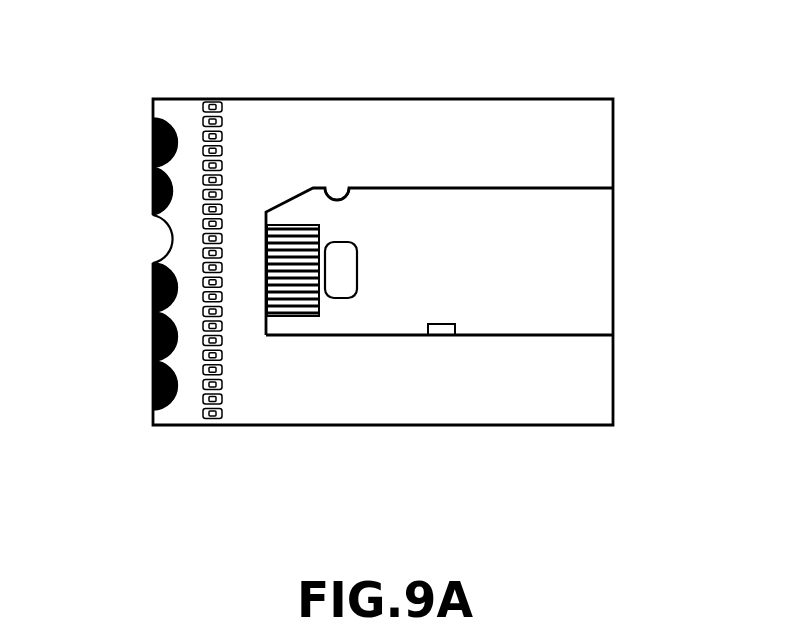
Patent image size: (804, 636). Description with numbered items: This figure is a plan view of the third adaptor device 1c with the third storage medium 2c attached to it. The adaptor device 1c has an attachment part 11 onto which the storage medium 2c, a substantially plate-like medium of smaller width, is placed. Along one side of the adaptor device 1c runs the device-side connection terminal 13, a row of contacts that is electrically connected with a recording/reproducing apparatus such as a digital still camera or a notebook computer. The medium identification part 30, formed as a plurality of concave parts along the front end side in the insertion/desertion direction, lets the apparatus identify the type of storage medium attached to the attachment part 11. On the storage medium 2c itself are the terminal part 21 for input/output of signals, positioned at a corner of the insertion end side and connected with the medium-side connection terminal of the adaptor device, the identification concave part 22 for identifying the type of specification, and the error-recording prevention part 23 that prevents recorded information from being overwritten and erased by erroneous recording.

The third adaptor device 1c is at (212, 452).
The third storage medium 2c is at (538, 261).
The attachment part 11 is at (516, 167).
The device-side connection terminal 13 is at (228, 181).
The terminal part 21 is at (289, 278).
The identification concave part 22 is at (338, 197).
The error-recording prevention part 23 is at (343, 285).
The medium identification part 30 is at (134, 329).